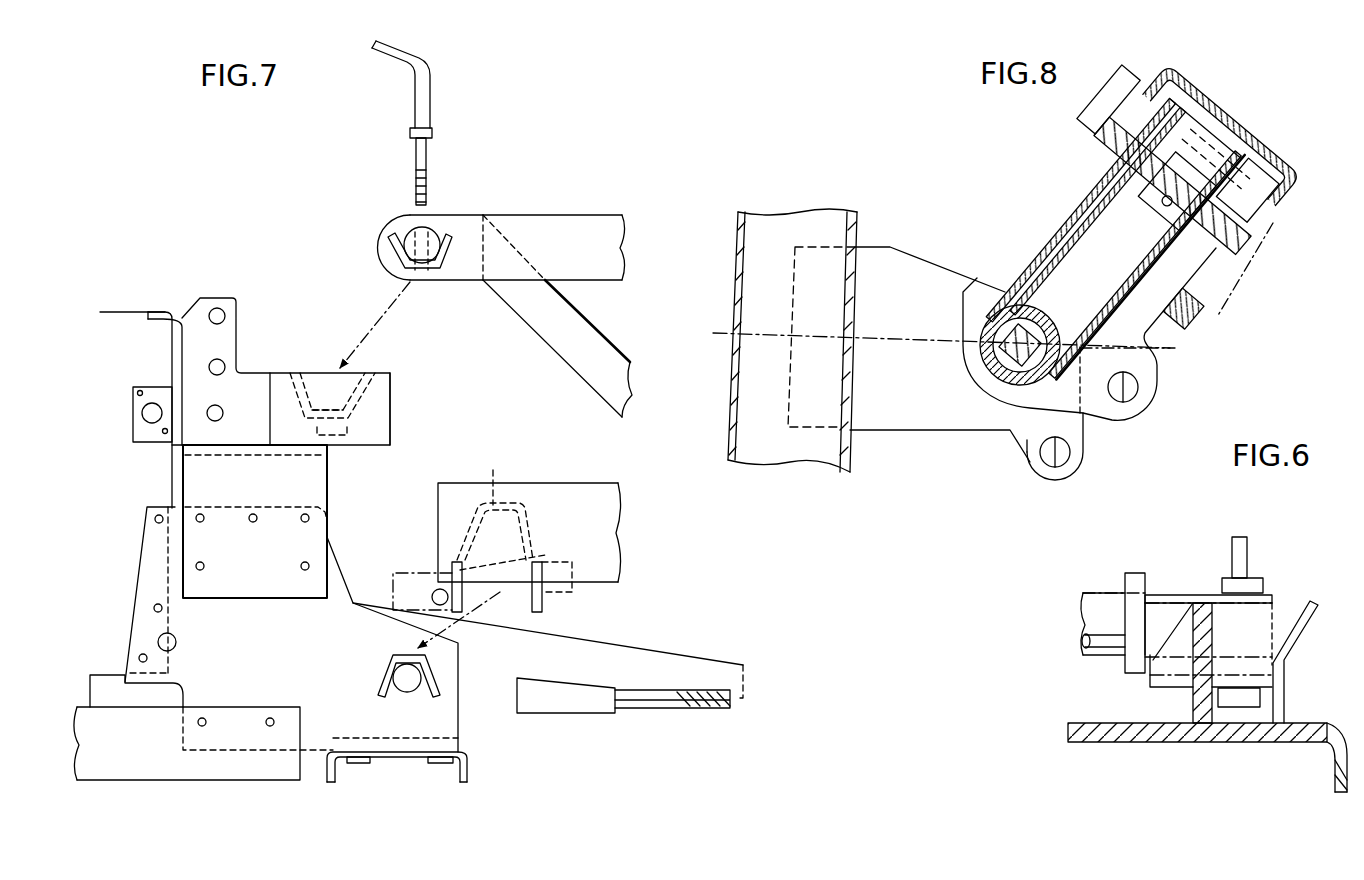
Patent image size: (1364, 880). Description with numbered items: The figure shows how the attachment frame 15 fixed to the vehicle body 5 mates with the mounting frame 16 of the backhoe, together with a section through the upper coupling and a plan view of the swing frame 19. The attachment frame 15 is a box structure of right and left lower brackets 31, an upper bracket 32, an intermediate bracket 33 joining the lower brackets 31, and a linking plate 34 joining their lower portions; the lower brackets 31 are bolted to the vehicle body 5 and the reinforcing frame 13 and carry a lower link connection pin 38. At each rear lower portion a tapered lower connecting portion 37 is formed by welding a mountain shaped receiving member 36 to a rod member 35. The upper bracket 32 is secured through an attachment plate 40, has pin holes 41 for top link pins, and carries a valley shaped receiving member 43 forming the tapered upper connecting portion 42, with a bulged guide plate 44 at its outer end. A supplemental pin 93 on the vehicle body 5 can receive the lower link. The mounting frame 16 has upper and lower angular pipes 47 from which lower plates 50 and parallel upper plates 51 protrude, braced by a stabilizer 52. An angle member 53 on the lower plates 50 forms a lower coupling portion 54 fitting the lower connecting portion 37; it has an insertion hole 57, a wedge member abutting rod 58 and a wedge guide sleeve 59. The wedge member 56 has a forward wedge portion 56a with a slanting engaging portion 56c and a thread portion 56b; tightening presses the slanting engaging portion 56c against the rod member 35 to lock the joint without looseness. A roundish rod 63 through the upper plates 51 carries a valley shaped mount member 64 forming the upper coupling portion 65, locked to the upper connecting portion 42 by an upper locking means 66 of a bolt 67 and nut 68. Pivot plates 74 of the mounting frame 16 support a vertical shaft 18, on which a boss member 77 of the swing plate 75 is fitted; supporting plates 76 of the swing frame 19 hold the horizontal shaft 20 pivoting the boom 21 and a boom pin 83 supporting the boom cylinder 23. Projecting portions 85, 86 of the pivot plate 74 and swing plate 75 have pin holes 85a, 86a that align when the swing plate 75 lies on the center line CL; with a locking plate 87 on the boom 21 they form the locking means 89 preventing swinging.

In FIG. 7, the vehicle body 5 is at (128, 322).
In FIG. 7, the reinforcing frame 13 is at (150, 762).
In FIG. 7, the attaching frame 15 is at (277, 312).
In FIG. 7, the mounting frame 16 is at (505, 268).
In FIG. 8, the vertical shaft 18 is at (1010, 300).
In FIG. 8, the swing frame 19 is at (1114, 237).
In FIG. 8, the horizontal shaft 20 is at (1280, 252).
In FIG. 8, the boom 21 is at (1218, 138).
In FIG. 8, the boom cylinder 23 is at (1182, 155).
In FIG. 7, the lower bracket 31 is at (318, 732).
In FIG. 7, the upper bracket 32 is at (248, 395).
In FIG. 6, the upper bracket 32 is at (1200, 700).
In FIG. 7, the intermediate bracket 33 is at (200, 475).
In FIG. 6, the intermediate bracket 33 is at (1232, 740).
In FIG. 7, the linking plate 34 is at (467, 770).
In FIG. 7, the rod member 35 is at (404, 678).
In FIG. 7, the mountain shaped receiving member 36 is at (392, 656).
In FIG. 7, the lower connecting portion 37 is at (364, 665).
In FIG. 7, the lower link connection pin 38 is at (160, 641).
In FIG. 7, the attachment plate 40 is at (170, 306).
In FIG. 7, the pin holes 41 is at (208, 320).
In FIG. 7, the upper connecting portion 42 is at (378, 372).
In FIG. 6, the upper connecting portion 42 is at (1160, 700).
In FIG. 7, the valley shaped receiving member 43 is at (375, 394).
In FIG. 6, the valley shaped receiving member 43 is at (1152, 690).
In FIG. 7, the guide plate 44 is at (378, 442).
In FIG. 6, the guide plate 44 is at (1283, 680).
In FIG. 8, the angular pipe 47 is at (738, 300).
In FIG. 7, the lower plate 50 is at (499, 540).
In FIG. 7, the upper plates 51 is at (540, 230).
In FIG. 6, the upper plates 51 is at (1128, 583).
In FIG. 7, the stabilizer 52 is at (572, 352).
In FIG. 7, the angle member 53 is at (496, 474).
In FIG. 7, the lower coupling portion 54 is at (455, 527).
In FIG. 7, the wedge member 56 is at (623, 740).
In FIG. 7, the forward wedge portion 56a is at (597, 705).
In FIG. 7, the thread portion 56b is at (686, 730).
In FIG. 7, the slanting engaging portion 56c is at (583, 680).
In FIG. 7, the insertion hole 57 is at (545, 562).
In FIG. 7, the wedge member abutting rod 58 is at (435, 594).
In FIG. 7, the wedge guide sleeve 59 is at (565, 590).
In FIG. 7, the roundish rod 63 is at (410, 235).
In FIG. 6, the roundish rod 63 is at (1162, 600).
In FIG. 7, the valley shaped mount member 64 is at (392, 245).
In FIG. 6, the valley shaped mount member 64 is at (1165, 640).
In FIG. 7, the upper coupling portion 65 is at (367, 222).
In FIG. 6, the upper coupling portion 65 is at (1208, 582).
In FIG. 7, the upper locking means 66 is at (406, 123).
In FIG. 6, the upper locking means 66 is at (1270, 544).
In FIG. 7, the bolt 67 is at (432, 118).
In FIG. 6, the bolt 67 is at (1263, 565).
In FIG. 7, the nut 68 is at (350, 428).
In FIG. 6, the nut 68 is at (1250, 698).
In FIG. 8, the pivot plates 74 is at (962, 432).
In FIG. 8, the swing plate 75 is at (1114, 237).
In FIG. 8, the supporting plates 76 is at (1098, 211).
In FIG. 8, the boss member 77 is at (993, 352).
In FIG. 8, the boom pin 83 is at (1177, 191).
In FIG. 8, the projecting portion 85 is at (1034, 460).
In FIG. 8, the pin hole 85a is at (1057, 468).
In FIG. 8, the projecting portion 86 is at (1148, 413).
In FIG. 8, the pin hole 86a is at (1123, 400).
In FIG. 8, the locking plate 87 is at (1183, 308).
In FIG. 8, the locking means 89 is at (1036, 498).
In FIG. 7, the supplemental pin 93 is at (152, 413).
In FIG. 8, the center line CL is at (890, 335).